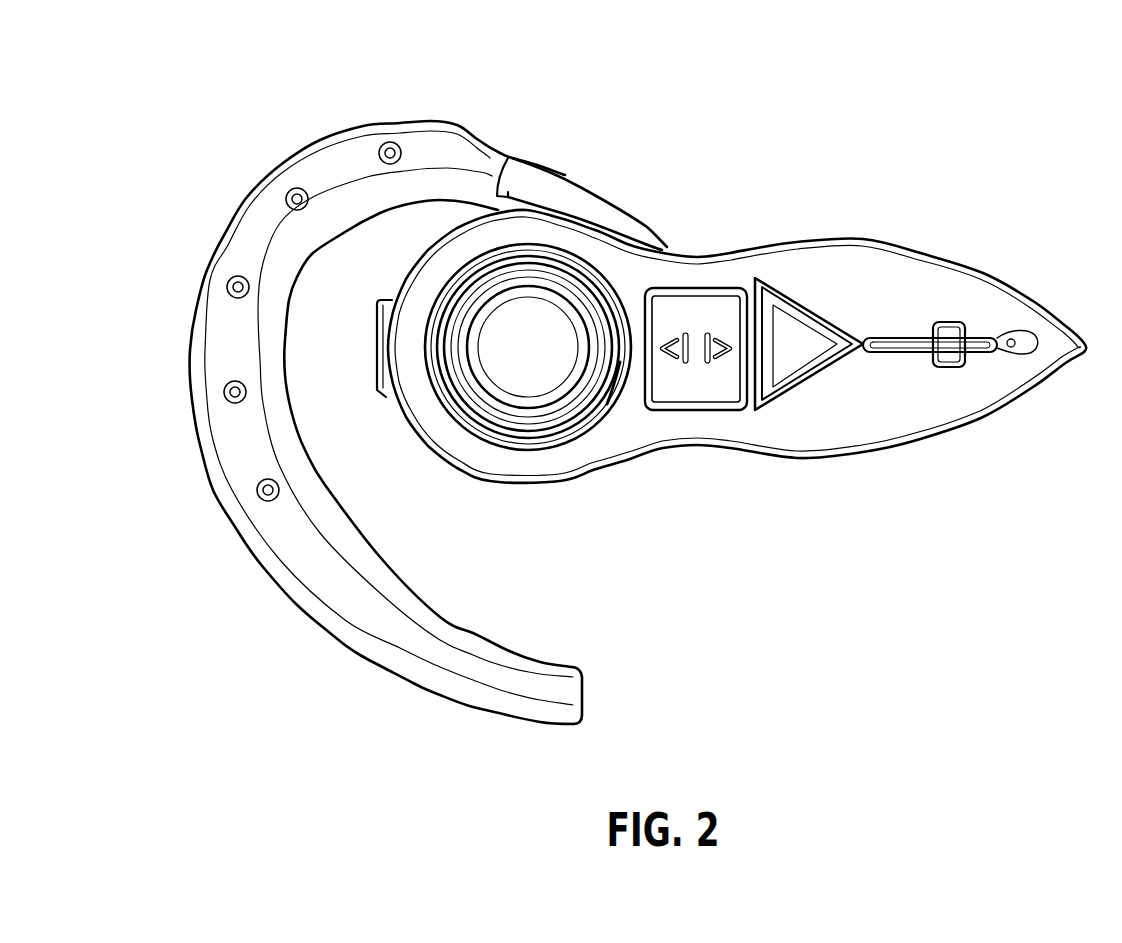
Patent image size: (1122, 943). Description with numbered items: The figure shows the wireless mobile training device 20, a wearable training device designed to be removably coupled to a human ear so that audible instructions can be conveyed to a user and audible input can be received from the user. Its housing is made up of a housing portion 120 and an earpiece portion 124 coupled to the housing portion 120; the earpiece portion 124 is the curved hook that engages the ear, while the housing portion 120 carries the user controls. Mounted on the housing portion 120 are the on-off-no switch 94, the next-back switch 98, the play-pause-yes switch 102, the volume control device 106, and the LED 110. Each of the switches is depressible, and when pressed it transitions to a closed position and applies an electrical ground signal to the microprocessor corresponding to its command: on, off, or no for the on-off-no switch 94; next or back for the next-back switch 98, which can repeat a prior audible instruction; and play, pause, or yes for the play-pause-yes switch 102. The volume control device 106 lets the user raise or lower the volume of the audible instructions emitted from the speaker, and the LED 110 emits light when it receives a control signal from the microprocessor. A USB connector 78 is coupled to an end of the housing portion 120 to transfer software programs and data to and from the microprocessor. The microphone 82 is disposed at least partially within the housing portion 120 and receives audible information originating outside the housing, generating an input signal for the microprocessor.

The wireless mobile training device 20 is at (738, 128).
The housing portion 120 is at (814, 240).
The earpiece portion 124 is at (210, 422).
The USB connector 78 is at (385, 390).
The on-off-no switch 94 is at (524, 383).
The light emitting diode (LED) 110 is at (609, 388).
The next-back switch 98 is at (695, 367).
The play-pause-yes switch 102 is at (798, 350).
The volume control device 106 is at (947, 367).
The microphone 82 is at (1011, 350).